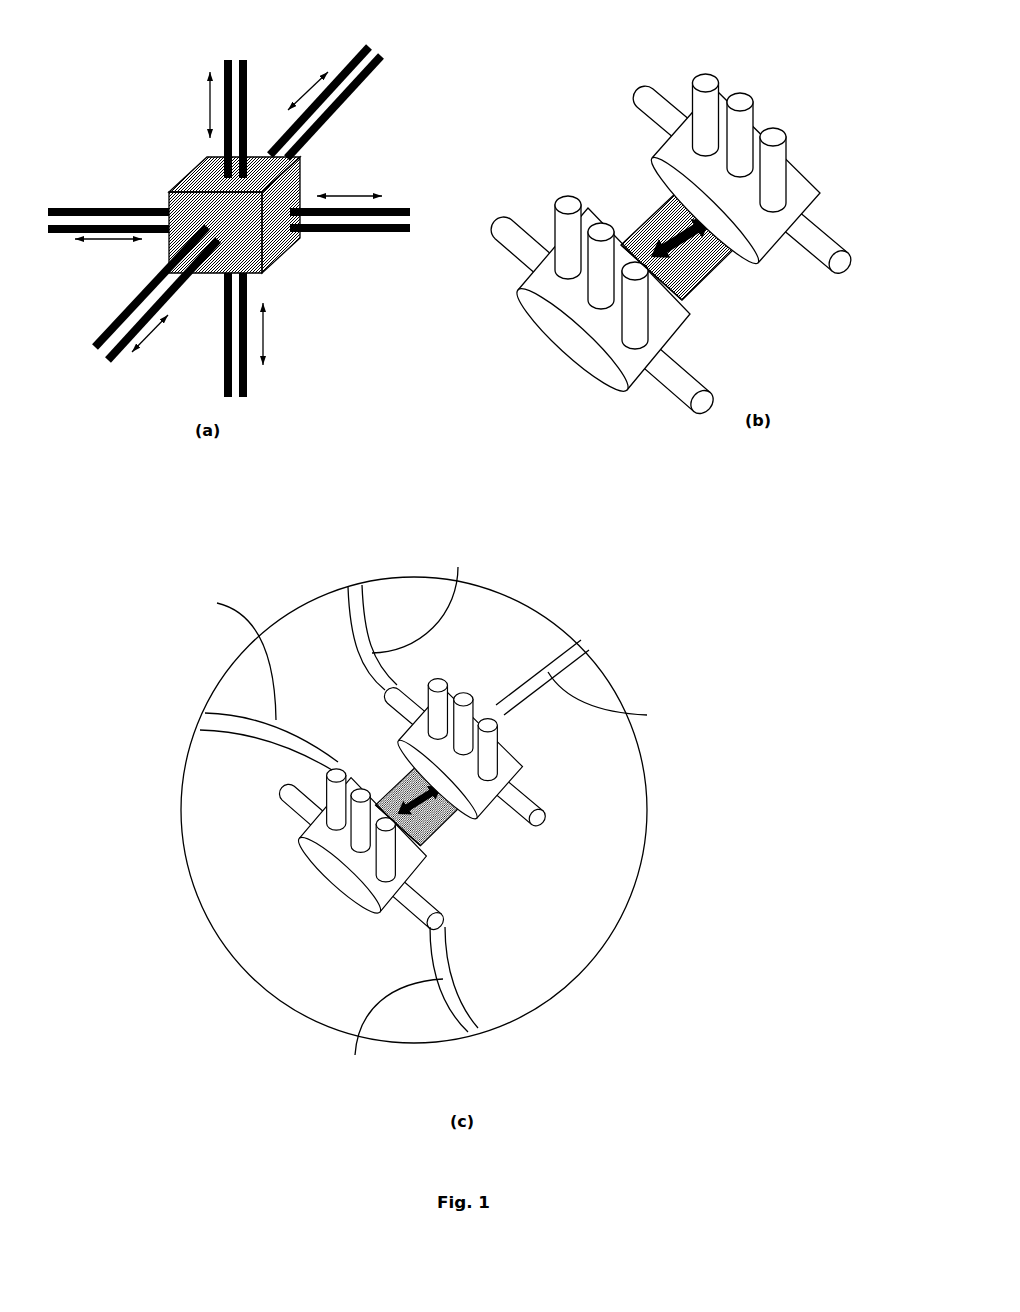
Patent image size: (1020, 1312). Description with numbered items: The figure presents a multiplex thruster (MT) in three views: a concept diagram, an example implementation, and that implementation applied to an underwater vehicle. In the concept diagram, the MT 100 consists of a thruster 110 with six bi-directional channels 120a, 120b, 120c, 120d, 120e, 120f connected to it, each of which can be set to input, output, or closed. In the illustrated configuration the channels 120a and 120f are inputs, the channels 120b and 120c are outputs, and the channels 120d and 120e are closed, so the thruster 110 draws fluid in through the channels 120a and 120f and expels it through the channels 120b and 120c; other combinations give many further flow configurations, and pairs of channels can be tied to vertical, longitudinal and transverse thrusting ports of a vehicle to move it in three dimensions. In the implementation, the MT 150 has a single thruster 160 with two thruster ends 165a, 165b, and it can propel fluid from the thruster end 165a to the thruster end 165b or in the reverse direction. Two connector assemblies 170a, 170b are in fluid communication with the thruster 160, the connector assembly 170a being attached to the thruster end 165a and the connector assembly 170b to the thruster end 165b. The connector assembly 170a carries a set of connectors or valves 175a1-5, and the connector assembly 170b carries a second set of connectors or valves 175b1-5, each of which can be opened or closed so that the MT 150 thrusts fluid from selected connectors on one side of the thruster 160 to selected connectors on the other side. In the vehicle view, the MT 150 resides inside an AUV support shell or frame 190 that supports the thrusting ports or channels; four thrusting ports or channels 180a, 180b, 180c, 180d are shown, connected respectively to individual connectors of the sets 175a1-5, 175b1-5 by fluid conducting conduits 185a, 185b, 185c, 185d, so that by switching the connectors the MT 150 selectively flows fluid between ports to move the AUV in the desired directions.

The multiplex thruster 100 is at (107, 89).
The thruster 110 is at (277, 262).
The bi-directional channel 120a is at (249, 116).
The bi-directional channel 120b is at (222, 335).
The bi-directional channel 120c is at (350, 229).
The bi-directional channel 120d is at (108, 213).
The bi-directional channel 120e is at (152, 293).
The bi-directional channel 120f is at (325, 102).
The multiplex thruster 150 is at (550, 89).
The thruster 160 is at (690, 288).
The thruster end 165a is at (708, 223).
The thruster end 165b is at (652, 258).
The connector assembly 170a is at (813, 178).
The connector assembly 170b is at (595, 382).
The connectors or valves 175a1-5 is at (823, 230).
The connectors or valves 175b1-5 is at (675, 367).
The thrusting port or channel 180a is at (364, 627).
The thrusting port or channel 180b is at (556, 674).
The thrusting port or channel 180c is at (466, 996).
The thrusting port or channel 180d is at (245, 737).
The fluid conducting conduit 185a is at (429, 600).
The fluid conducting conduit 185b is at (617, 699).
The fluid conducting conduit 185c is at (395, 1030).
The fluid conducting conduit 185d is at (223, 660).
The AUV support shell or frame 190 is at (573, 978).